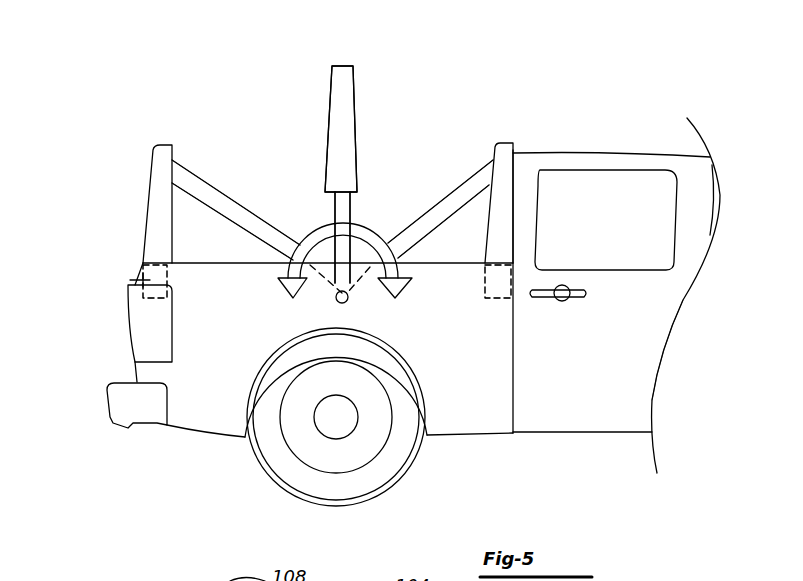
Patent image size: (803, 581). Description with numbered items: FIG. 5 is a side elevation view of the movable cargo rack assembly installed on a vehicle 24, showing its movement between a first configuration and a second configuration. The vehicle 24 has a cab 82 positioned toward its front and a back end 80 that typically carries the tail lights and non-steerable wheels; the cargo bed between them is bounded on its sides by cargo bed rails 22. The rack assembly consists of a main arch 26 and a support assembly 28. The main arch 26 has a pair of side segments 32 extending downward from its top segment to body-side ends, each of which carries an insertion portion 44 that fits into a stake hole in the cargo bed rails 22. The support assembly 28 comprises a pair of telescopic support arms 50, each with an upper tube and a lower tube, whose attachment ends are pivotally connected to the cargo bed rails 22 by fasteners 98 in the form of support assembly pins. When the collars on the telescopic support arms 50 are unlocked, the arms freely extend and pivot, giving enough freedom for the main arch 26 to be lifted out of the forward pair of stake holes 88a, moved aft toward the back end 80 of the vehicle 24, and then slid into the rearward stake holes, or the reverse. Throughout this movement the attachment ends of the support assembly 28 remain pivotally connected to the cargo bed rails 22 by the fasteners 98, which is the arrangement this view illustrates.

The cargo bed rails 22 is at (213, 355).
The vehicle 24 is at (610, 465).
The main arch 26 is at (362, 100).
The support assembly 28 is at (232, 193).
The side segments 32 is at (160, 160).
The insertion portion 44 is at (140, 278).
The telescopic support arms 50 is at (245, 227).
The back end 80 is at (82, 391).
The cab 82 is at (595, 380).
The forward pair of stake holes 88a is at (145, 250).
The fasteners 98 is at (350, 303).